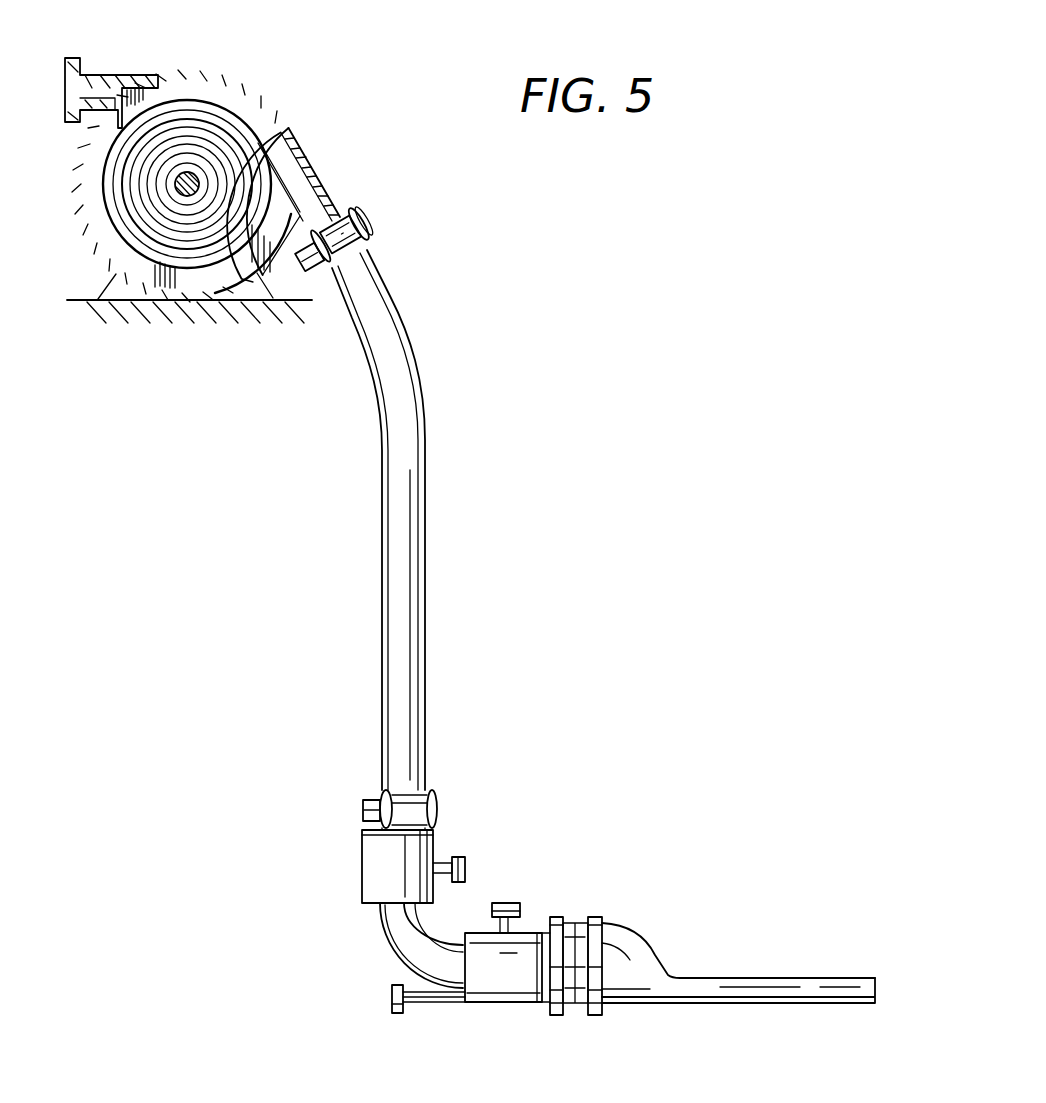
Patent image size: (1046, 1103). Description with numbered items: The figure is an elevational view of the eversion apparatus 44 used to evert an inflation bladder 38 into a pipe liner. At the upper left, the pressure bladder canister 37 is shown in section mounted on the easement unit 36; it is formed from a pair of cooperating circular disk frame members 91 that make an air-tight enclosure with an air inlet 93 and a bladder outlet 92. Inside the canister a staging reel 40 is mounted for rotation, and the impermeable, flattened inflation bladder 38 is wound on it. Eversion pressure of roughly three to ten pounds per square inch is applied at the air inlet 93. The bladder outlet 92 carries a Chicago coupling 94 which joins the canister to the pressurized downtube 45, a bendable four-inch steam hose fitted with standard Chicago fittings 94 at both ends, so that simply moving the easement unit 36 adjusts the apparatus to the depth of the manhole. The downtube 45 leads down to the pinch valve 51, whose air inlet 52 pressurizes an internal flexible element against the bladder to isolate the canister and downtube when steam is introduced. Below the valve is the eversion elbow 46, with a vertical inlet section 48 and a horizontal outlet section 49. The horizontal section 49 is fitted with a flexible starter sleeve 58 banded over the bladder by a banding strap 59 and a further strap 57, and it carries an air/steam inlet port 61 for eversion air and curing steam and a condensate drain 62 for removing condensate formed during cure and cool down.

The pressure bladder canister 37 is at (210, 52).
The air inlet 93 is at (111, 82).
The circular disk frame members 91 is at (265, 100).
The staging reel 40 is at (176, 182).
The inflation bladder 38 is at (303, 187).
The bladder outlet 92 is at (342, 200).
The Chicago fittings 94 is at (375, 218).
The easement unit 36 is at (76, 310).
The eversion apparatus 44 is at (462, 488).
The pressurized downtube 45 is at (426, 634).
The air inlet 52 is at (442, 861).
The vertical section 48 is at (377, 903).
The pinch valve 51 is at (380, 876).
The eversion elbow 46 is at (382, 937).
The air/steam inlet port 61 is at (517, 924).
The clamp 57 is at (555, 915).
The banding strap 59 is at (594, 915).
The starter sleeve 58 is at (650, 966).
The condensate drain 62 is at (406, 1013).
The horizontal section 49 is at (506, 965).